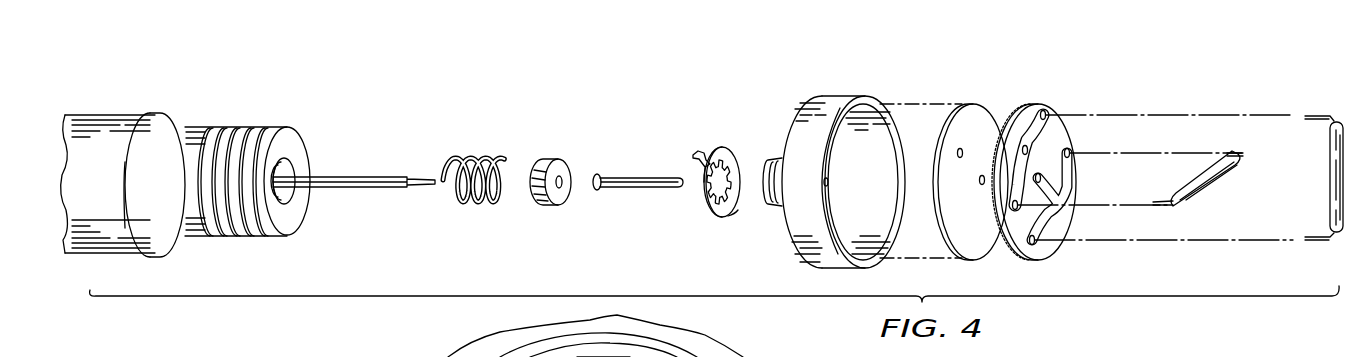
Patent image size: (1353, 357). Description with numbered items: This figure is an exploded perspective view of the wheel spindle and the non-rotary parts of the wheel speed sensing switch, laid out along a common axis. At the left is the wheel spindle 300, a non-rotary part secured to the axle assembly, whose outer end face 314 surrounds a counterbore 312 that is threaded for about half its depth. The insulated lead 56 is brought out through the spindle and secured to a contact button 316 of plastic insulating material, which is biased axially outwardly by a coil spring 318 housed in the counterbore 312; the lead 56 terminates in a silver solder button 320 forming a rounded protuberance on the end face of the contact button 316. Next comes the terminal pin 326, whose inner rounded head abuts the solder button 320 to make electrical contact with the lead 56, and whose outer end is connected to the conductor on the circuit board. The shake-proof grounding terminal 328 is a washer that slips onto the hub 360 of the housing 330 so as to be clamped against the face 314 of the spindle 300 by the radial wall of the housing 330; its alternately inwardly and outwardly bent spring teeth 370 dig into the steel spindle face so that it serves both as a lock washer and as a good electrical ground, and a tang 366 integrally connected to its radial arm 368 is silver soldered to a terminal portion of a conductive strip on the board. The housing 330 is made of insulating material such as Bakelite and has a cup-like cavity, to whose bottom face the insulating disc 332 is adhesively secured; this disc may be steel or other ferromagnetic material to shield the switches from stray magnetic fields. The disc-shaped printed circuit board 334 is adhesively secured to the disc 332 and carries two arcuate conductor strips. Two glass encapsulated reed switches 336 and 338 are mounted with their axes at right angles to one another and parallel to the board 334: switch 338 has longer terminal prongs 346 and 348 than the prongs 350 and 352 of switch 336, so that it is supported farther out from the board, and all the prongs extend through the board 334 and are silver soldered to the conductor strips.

The wheel spindle 300 is at (212, 121).
The counterbore 312 is at (293, 168).
The outer end face 314 is at (290, 228).
The lead 56 is at (363, 173).
The coil spring 318 is at (470, 157).
The contact button 316 is at (548, 158).
The silver solder button 320 is at (561, 177).
The terminal pin 326 is at (637, 178).
The shake-proof grounding terminal 328 is at (728, 152).
The tang 366 is at (698, 150).
The radial arm 368 is at (700, 168).
The spring teeth 370 is at (737, 217).
The housing 330 is at (837, 98).
The hub 360 is at (777, 206).
The insulating disc 332 is at (980, 105).
The printed circuit board 334 is at (1047, 110).
The reed switch 336 is at (1215, 184).
The terminal prong 350 is at (1157, 206).
The terminal prong 352 is at (1237, 152).
The reed switch 338 is at (1330, 145).
The terminal prong 346 is at (1323, 242).
The terminal prong 348 is at (1322, 113).